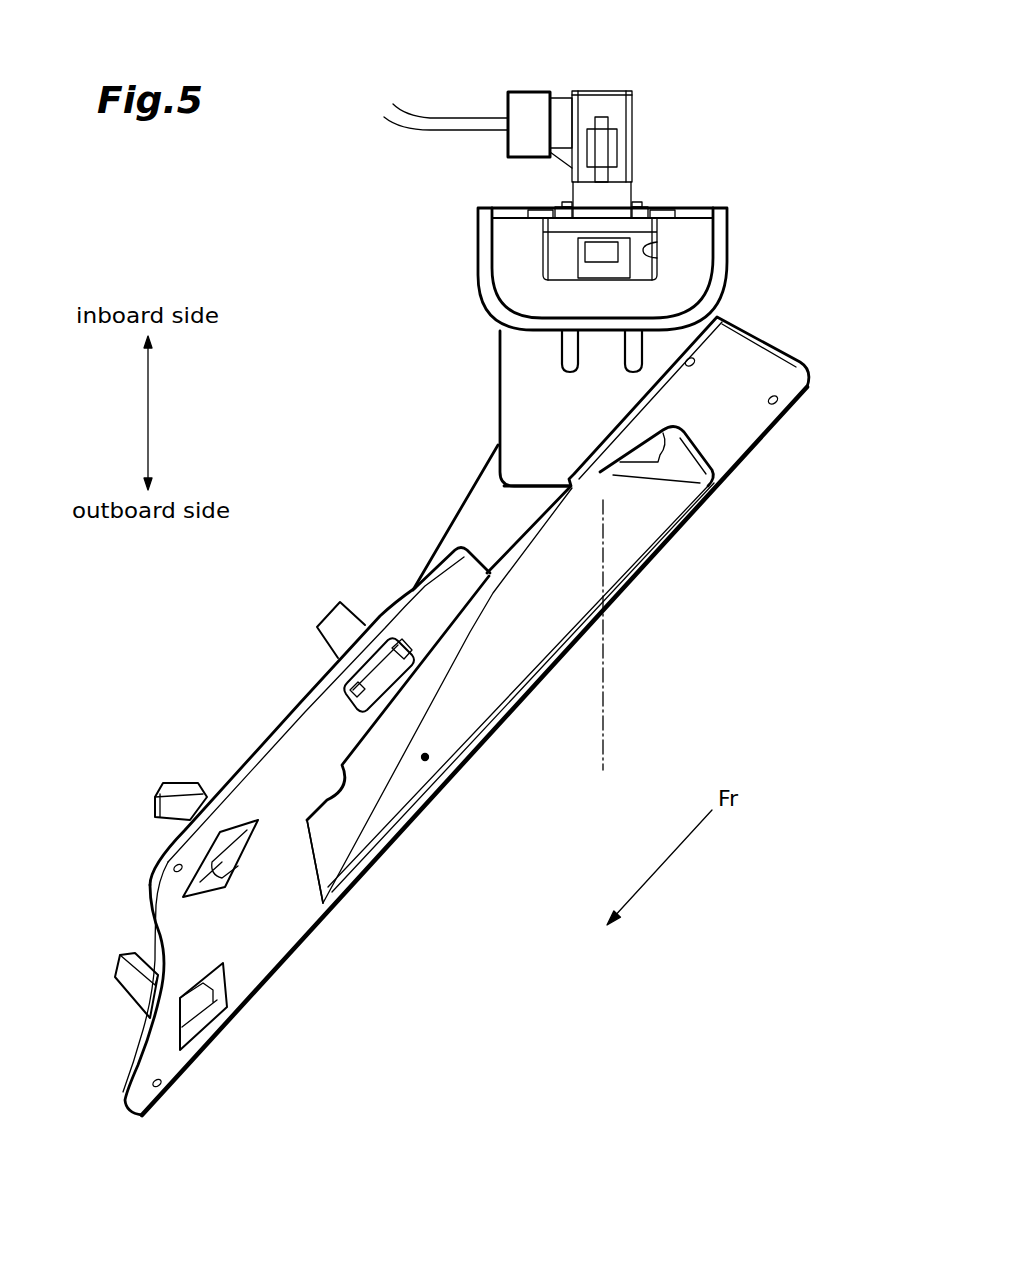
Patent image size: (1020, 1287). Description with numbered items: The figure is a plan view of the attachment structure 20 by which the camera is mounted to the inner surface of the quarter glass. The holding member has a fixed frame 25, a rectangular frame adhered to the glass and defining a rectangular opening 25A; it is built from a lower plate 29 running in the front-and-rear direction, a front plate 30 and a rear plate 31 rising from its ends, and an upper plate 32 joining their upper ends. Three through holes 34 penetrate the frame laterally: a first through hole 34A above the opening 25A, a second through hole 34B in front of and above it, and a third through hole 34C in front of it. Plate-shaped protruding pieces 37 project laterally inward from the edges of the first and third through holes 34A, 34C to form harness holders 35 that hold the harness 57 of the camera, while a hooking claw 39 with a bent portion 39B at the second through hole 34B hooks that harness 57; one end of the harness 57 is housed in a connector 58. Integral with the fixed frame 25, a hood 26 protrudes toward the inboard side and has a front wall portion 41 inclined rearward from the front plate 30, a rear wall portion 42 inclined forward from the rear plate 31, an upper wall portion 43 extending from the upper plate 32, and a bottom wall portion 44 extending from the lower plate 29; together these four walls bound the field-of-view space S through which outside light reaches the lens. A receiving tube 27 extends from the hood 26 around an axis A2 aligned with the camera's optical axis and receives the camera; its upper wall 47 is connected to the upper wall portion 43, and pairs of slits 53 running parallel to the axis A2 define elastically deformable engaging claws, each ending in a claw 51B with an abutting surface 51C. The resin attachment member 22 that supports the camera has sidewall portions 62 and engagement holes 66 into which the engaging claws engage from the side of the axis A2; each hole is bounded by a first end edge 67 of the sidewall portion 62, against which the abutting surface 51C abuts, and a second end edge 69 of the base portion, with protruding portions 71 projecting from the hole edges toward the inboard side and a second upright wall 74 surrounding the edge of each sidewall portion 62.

The connector mounting device 20 is at (296, 272).
The attachment member 22 is at (689, 205).
The fixed frame 25 is at (284, 697).
The opening 25A is at (322, 798).
The hood 26 is at (464, 489).
The receiving tube 27 is at (486, 393).
The lower plate 29 is at (518, 695).
The front plate 30 is at (257, 967).
The rear plate 31 is at (782, 368).
The upper plate 32 is at (445, 605).
The through holes 34 is at (228, 832).
The first through hole 34A is at (392, 659).
The second through hole 34B is at (176, 868).
The third through hole 34C is at (180, 1013).
The harness holder 35 is at (116, 1003).
The protruding piece 37 is at (333, 620).
The hooking claw 39 is at (168, 780).
The bent portion 39B is at (155, 797).
The front wall portion 41 is at (340, 835).
The rear wall portion 42 is at (678, 465).
The upper wall portion 43 is at (487, 490).
The bottom wall portion 44 is at (637, 530).
The upper wall 47 is at (515, 344).
The claw 51B is at (565, 265).
The abutting surface 51C is at (590, 283).
The slits 53 is at (575, 355).
The harness 57 is at (461, 118).
The connector 58 is at (597, 104).
The sidewall portion 62 is at (701, 229).
The engagement hole 66 is at (652, 255).
The first end edge 67 is at (593, 267).
The second end edge 69 is at (638, 226).
The protruding portion 71 is at (608, 182).
The second upright wall 74 is at (720, 228).
The field-of-view space S is at (425, 757).
The axis A2 is at (612, 705).